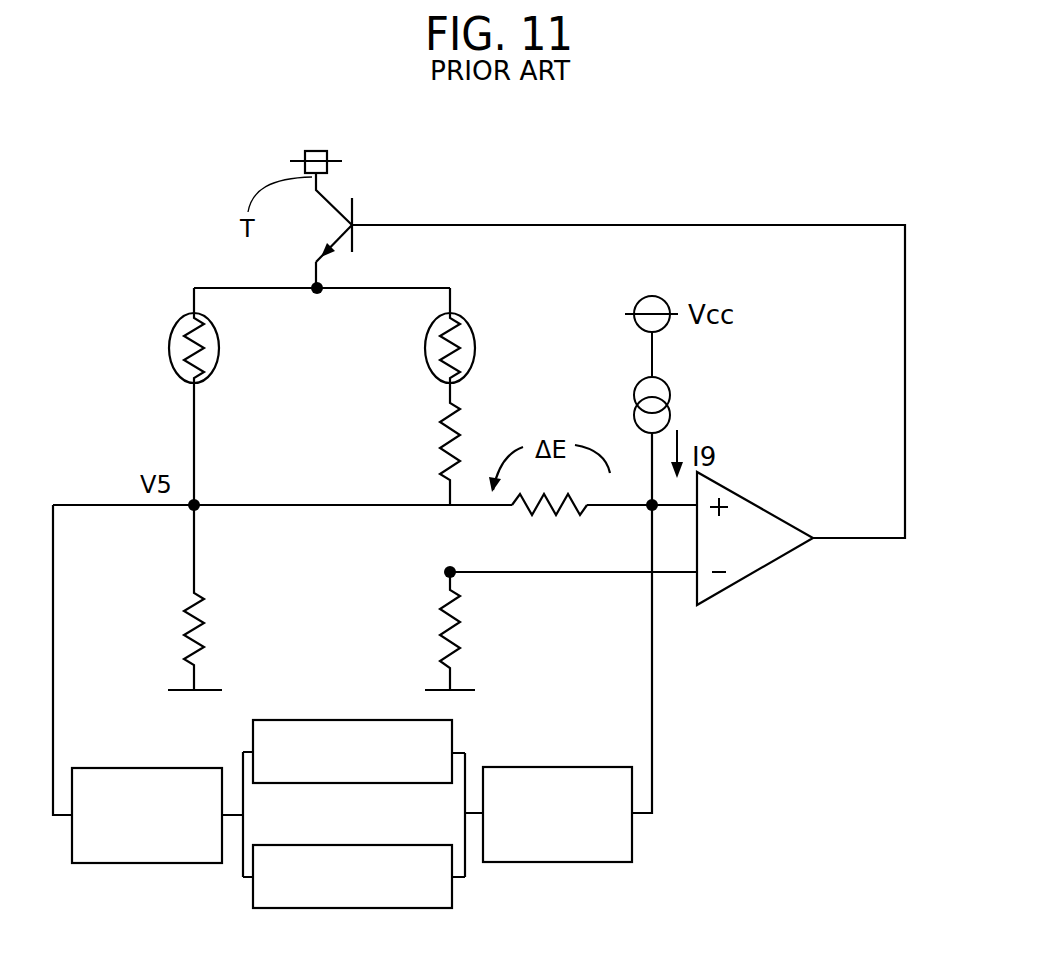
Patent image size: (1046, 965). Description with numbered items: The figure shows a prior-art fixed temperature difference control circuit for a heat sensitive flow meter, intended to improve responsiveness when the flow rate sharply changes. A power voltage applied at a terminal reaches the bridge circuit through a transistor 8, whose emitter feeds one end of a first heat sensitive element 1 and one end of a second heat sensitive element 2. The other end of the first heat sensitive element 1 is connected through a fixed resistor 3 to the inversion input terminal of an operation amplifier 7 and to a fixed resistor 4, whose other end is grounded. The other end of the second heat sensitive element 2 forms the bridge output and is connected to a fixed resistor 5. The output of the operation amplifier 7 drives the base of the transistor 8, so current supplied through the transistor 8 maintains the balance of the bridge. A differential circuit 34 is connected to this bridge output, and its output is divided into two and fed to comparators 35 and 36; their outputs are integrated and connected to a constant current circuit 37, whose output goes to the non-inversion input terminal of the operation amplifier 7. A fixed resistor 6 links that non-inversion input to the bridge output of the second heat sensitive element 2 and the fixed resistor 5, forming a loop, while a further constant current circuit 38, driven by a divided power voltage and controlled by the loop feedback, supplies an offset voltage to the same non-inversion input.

The first heat sensitive element 1 is at (425, 365).
The second heat sensitive element 2 is at (170, 365).
The fixed resistor 3 is at (440, 448).
The fixed resistor 4 is at (438, 635).
The fixed resistor 5 is at (183, 635).
The fixed resistor 6 is at (553, 517).
The operation amplifier 7 is at (737, 585).
The transistor 8 is at (353, 211).
The differential circuit 34 is at (157, 768).
The comparator 35 is at (362, 720).
The comparator 36 is at (365, 908).
The constant current circuit 37 is at (585, 767).
The constant current circuit 38 is at (670, 417).